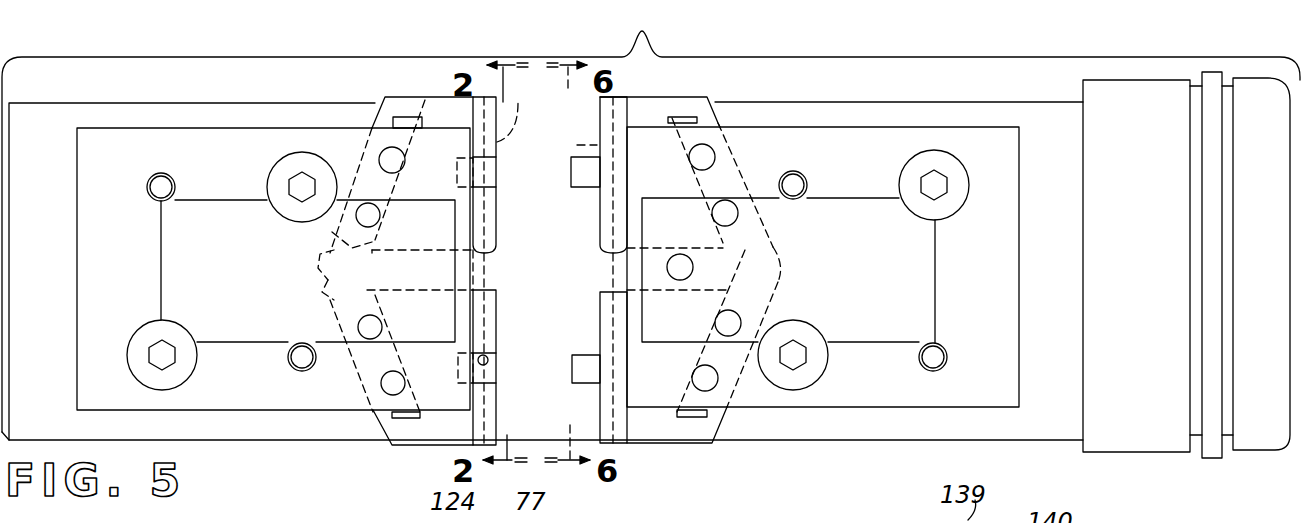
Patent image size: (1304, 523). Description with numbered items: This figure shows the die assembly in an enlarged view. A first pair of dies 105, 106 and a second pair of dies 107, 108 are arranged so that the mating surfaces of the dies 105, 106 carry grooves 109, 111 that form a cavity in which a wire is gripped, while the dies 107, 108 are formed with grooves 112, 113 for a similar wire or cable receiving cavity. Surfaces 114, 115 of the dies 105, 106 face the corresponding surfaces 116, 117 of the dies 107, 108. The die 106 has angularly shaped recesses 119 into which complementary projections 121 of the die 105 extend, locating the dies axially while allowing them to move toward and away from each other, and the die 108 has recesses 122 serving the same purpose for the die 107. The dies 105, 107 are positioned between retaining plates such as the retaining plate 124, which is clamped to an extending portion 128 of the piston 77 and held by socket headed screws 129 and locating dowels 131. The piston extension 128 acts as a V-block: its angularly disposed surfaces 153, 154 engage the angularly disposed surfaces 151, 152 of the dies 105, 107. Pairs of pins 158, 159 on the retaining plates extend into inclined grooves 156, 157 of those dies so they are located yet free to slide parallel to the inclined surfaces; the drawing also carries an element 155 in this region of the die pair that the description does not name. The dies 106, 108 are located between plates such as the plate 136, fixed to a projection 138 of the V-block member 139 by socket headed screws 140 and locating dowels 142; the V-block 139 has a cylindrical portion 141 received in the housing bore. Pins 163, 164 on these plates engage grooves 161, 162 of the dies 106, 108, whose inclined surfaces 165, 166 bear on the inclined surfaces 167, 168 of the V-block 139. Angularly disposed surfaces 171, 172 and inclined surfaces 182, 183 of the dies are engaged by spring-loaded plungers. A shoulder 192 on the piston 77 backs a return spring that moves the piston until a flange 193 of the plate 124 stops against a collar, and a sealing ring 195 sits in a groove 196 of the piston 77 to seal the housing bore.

The piston 77 is at (1140, 435).
The die 105 is at (657, 102).
The die 106 is at (468, 103).
The die 107 is at (663, 430).
The die 108 is at (473, 432).
The groove 109 is at (577, 145).
The groove 111 is at (530, 118).
The groove 112 is at (613, 327).
The groove 113 is at (487, 332).
The surface 114 is at (607, 255).
The surface 115 is at (490, 252).
The surface 116 is at (617, 290).
The surface 117 is at (483, 287).
The angularly shaped recess 119 is at (495, 180).
The projection 121 is at (578, 177).
The recess 122 is at (493, 360).
The retaining plate 124 is at (820, 402).
The extending portion of the piston 128 is at (893, 73).
The socket headed screw 129 is at (945, 207).
The locating dowel 131 is at (803, 175).
The plate 136 is at (268, 143).
The projection 138 is at (223, 117).
The V-block member 139 is at (50, 122).
The socket headed screw 140 is at (278, 168).
The cylindrical portion 141 is at (50, 443).
The locating dowel 142 is at (157, 170).
The angularly disposed surface 151 is at (713, 112).
The angularly disposed surface 152 is at (730, 430).
The angularly disposed surface 153 is at (788, 235).
The angularly disposed surface 154 is at (767, 287).
The roller 155 is at (683, 256).
The inclined groove 156 is at (680, 128).
The inclined groove 157 is at (692, 380).
The pin 158 is at (690, 160).
The pin 159 is at (712, 328).
The groove 161 is at (420, 120).
The groove 162 is at (422, 270).
The pin 163 is at (380, 207).
The pin 164 is at (382, 328).
The inclined surface 165 is at (374, 113).
The inclined surface 166 is at (375, 422).
The inclined surface 167 is at (327, 232).
The inclined surface 168 is at (320, 290).
The angularly disposed surface 171 is at (767, 232).
The angularly disposed surface 172 is at (753, 273).
The inclined surface 182 is at (334, 250).
The inclined surface 183 is at (328, 312).
The shoulder 192 is at (1073, 312).
The flange 193 is at (715, 323).
The sealing ring 195 is at (1217, 453).
The groove 196 is at (1193, 133).